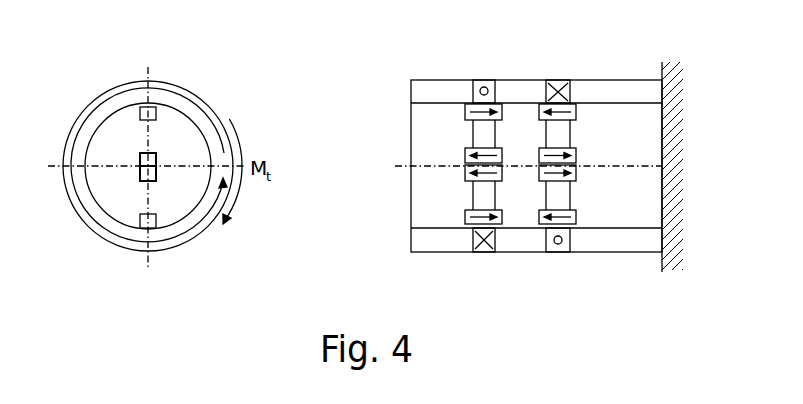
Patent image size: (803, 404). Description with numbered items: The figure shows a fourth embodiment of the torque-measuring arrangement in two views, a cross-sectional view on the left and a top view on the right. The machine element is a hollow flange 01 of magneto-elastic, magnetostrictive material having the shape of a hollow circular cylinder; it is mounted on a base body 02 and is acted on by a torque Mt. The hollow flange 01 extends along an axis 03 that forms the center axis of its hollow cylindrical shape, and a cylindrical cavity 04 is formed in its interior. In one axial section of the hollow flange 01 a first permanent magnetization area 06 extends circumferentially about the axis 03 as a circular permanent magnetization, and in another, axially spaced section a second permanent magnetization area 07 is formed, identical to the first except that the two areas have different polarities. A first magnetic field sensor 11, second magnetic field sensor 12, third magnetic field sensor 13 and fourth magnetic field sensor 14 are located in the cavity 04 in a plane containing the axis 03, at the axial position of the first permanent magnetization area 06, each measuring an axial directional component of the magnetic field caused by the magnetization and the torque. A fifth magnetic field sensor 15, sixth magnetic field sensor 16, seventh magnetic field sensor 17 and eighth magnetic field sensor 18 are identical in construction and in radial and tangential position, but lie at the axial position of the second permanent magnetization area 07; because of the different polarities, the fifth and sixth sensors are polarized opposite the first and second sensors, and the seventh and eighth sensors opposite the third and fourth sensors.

The hollow flange 01 is at (173, 83).
The base body 02 is at (672, 107).
The axis 03 is at (145, 170).
The cylindrical cavity 04 is at (177, 140).
The first permanent magnetization area 06 is at (153, 88).
The second permanent magnetization area 07 is at (560, 80).
The first magnetic field sensor 11 is at (140, 157).
The second magnetic field sensor 12 is at (157, 170).
The third magnetic field sensor 13 is at (142, 105).
The fourth magnetic field sensor 14 is at (140, 220).
The fifth magnetic field sensor 15 is at (577, 163).
The sixth magnetic field sensor 16 is at (540, 183).
The seventh magnetic field sensor 17 is at (576, 110).
The eighth magnetic field sensor 18 is at (572, 252).